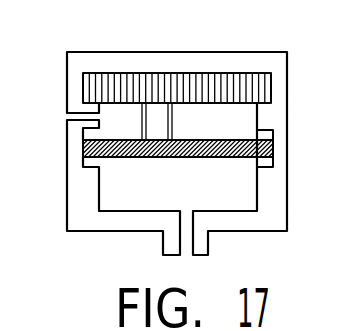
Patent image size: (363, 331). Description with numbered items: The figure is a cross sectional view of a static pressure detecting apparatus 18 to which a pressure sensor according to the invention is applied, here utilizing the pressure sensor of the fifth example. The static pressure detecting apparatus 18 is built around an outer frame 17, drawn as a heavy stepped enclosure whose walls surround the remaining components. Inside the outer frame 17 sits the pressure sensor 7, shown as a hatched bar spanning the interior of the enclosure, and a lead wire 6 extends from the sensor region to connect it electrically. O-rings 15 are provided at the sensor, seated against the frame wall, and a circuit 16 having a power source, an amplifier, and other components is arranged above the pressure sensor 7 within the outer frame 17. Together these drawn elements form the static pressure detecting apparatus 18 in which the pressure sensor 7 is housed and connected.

The lead wire 6 is at (155, 118).
The pressure sensor 7 is at (83, 147).
The O-rings 15 is at (273, 132).
The circuit 16 is at (233, 87).
The outer frame 17 is at (269, 218).
The static pressure detecting apparatus 18 is at (119, 120).